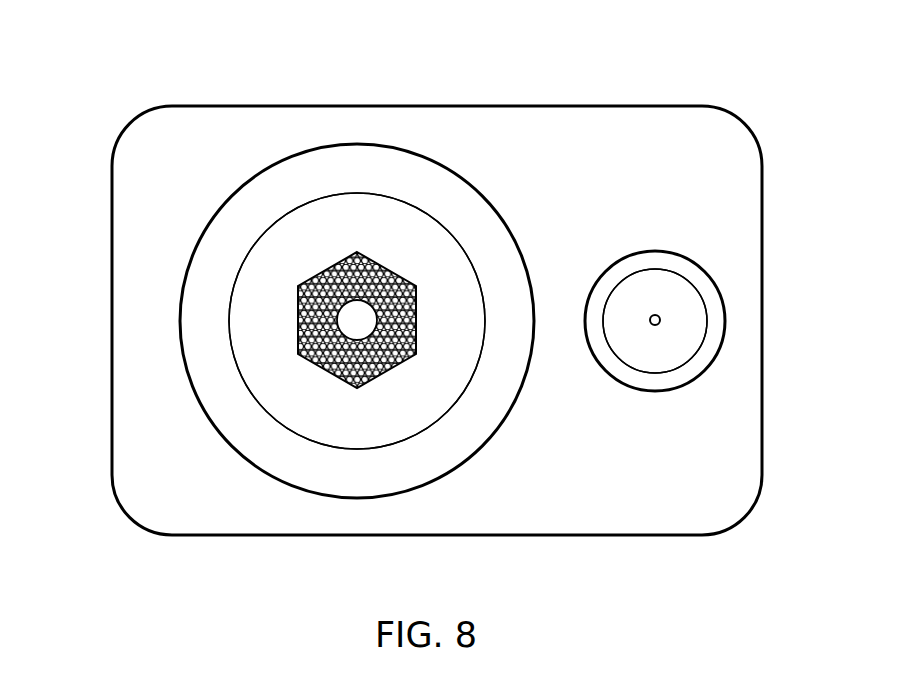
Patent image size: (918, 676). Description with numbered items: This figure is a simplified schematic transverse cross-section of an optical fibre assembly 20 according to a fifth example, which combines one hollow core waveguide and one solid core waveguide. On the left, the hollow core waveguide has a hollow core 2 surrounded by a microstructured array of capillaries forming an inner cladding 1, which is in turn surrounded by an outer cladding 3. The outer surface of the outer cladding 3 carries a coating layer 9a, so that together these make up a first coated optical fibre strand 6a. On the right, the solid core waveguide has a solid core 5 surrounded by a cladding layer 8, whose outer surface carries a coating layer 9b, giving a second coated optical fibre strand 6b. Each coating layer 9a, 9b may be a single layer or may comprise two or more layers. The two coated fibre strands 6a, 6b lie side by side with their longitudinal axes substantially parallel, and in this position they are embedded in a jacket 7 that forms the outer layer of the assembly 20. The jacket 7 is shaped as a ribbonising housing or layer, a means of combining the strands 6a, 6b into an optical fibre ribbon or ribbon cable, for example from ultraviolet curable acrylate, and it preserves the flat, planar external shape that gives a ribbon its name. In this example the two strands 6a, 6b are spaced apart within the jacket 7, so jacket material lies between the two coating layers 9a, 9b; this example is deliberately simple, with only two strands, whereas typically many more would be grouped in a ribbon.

The optical fibre assembly 20 is at (177, 91).
The inner cladding 1 is at (393, 273).
The hollow core 2 is at (357, 317).
The outer cladding 3 is at (283, 397).
The solid core 5 is at (655, 318).
The first coated optical fibre strand 6a is at (288, 152).
The second coated optical fibre strand 6b is at (643, 248).
The jacket 7 is at (713, 508).
The cladding layer 8 is at (635, 353).
The coating layer 9a is at (352, 482).
The coating layer 9b is at (670, 380).